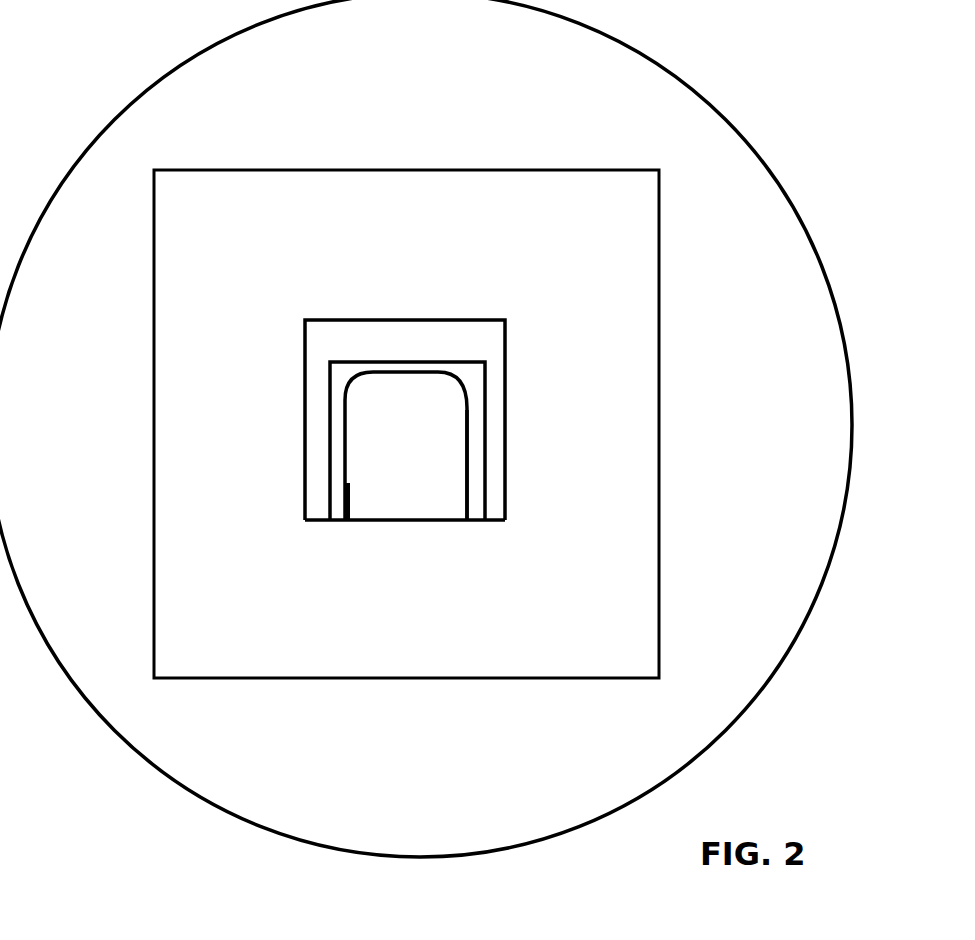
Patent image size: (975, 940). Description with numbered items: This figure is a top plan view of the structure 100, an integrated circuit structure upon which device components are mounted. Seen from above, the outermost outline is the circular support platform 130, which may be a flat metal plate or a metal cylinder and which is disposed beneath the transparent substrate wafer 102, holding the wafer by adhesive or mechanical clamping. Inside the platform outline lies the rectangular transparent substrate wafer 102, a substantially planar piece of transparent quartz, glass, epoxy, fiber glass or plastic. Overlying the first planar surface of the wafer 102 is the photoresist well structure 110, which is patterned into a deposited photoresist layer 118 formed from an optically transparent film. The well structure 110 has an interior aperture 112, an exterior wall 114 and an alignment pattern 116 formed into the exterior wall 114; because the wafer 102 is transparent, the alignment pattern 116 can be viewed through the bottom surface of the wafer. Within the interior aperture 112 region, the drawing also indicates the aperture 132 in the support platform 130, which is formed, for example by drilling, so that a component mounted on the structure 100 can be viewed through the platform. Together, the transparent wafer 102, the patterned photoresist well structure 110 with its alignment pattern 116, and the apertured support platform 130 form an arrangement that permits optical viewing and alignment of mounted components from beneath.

The structure 100 is at (426, 428).
The transparent substrate wafer 102 is at (659, 622).
The photoresist well structure 110 is at (415, 414).
The interior aperture 112 is at (412, 450).
The exterior wall 114 is at (305, 500).
The alignment pattern 116 is at (306, 365).
The deposited photoresist layer 118 is at (360, 324).
The support platform 130 is at (96, 134).
The aperture 132 is at (430, 482).